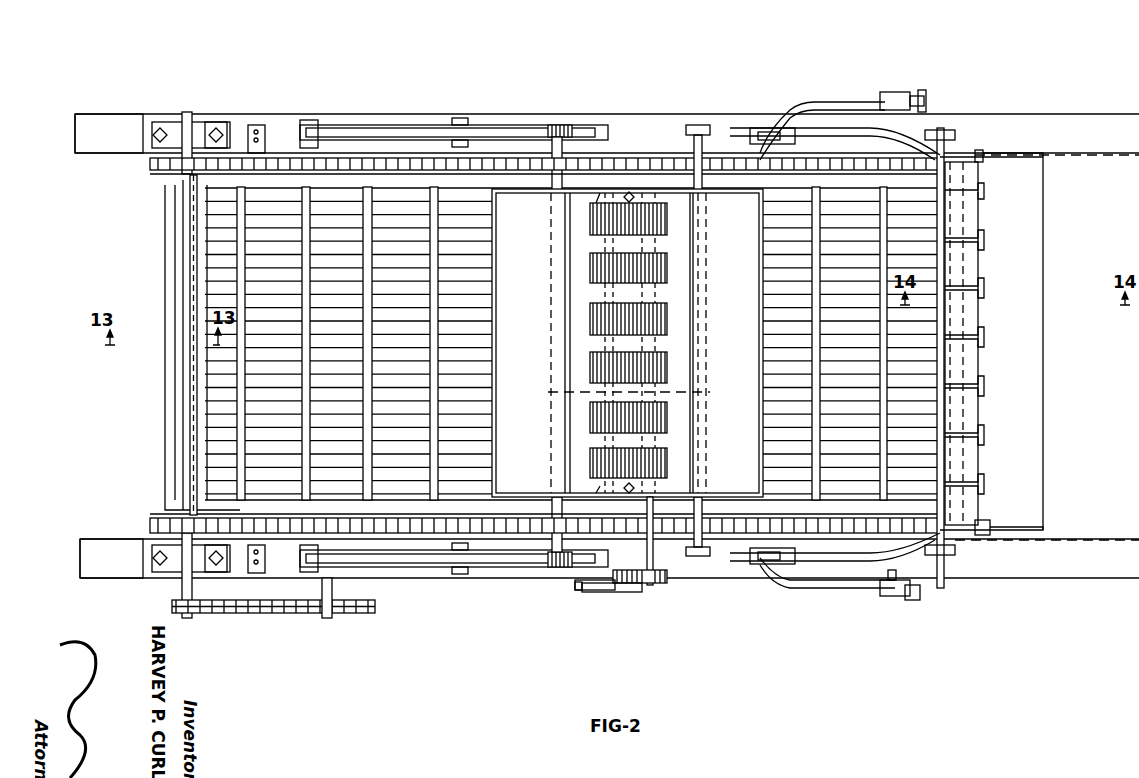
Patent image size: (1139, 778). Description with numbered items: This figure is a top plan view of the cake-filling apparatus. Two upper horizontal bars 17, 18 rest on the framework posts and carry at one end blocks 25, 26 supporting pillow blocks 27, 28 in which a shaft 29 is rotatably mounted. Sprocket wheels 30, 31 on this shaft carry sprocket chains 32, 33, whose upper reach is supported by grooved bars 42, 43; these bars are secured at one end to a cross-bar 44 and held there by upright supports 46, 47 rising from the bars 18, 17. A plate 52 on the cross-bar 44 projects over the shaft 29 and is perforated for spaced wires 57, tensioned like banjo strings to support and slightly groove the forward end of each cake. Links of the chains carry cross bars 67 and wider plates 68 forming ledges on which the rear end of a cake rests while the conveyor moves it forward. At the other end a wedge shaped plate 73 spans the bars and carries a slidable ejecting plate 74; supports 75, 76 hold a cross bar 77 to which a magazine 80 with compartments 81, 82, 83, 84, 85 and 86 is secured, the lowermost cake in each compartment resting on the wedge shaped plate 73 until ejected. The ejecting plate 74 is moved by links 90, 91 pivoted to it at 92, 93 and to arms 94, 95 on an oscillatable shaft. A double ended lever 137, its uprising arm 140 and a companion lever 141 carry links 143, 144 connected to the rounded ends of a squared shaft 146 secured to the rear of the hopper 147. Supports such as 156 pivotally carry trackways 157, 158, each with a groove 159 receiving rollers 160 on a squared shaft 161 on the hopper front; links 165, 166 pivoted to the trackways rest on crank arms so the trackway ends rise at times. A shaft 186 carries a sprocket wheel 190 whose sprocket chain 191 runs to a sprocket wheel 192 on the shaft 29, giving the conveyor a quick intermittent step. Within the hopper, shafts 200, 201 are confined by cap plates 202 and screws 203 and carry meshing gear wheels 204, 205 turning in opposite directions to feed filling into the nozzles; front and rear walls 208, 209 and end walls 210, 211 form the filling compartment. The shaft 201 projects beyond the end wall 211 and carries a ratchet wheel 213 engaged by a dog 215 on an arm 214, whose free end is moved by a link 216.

The upper horizontal bar 17 is at (90, 565).
The upper horizontal bar 18 is at (118, 118).
The block 25 is at (148, 572).
The block 26 is at (148, 122).
The pillow block 27 is at (175, 570).
The pillow block 28 is at (215, 122).
The shaft 29 is at (187, 112).
The sprocket wheel 30 is at (160, 516).
The sprocket wheel 31 is at (155, 176).
The sprocket chain 32 is at (282, 533).
The sprocket chain 33 is at (282, 160).
The bar 42 is at (454, 561).
The bar 43 is at (375, 114).
The cross-bar 44 is at (185, 467).
The upright support 46 is at (257, 573).
The upright support 47 is at (257, 125).
The plate 52 is at (165, 454).
The wires 57 is at (395, 327).
The cross bar 67 is at (363, 186).
The plate 68 is at (300, 186).
The wedge shaped plate 73 is at (607, 346).
The ejecting plate 74 is at (1043, 241).
The support 75 is at (942, 570).
The support 76 is at (945, 128).
The cross bar 77 is at (937, 190).
The magazine 80 is at (982, 195).
The compartment 81 is at (982, 229).
The compartment 82 is at (982, 277).
The compartment 83 is at (982, 324).
The compartment 84 is at (982, 371).
The compartment 85 is at (982, 424).
The compartment 86 is at (982, 484).
The link 90 is at (888, 561).
The link 91 is at (855, 136).
The pivot 92 is at (983, 535).
The pivot 93 is at (984, 152).
The arm 94 is at (760, 555).
The arm 95 is at (760, 140).
The double ended lever 137 is at (922, 90).
The uprising arm 140 is at (890, 92).
The lever 141 is at (885, 596).
The link 143 is at (845, 102).
The link 144 is at (840, 590).
The squared shaft 146 is at (706, 374).
The hopper 147 is at (758, 226).
The support 156 is at (305, 120).
The trackway 157 is at (400, 572).
The trackway 158 is at (398, 125).
The groove 159 is at (512, 128).
The roller 160 is at (556, 125).
The squared shaft 161 is at (551, 360).
The link 165 is at (460, 574).
The link 166 is at (462, 118).
The shaft 186 is at (332, 618).
The sprocket wheel 190 is at (287, 613).
The sprocket chain 191 is at (265, 613).
The sprocket wheel 192 is at (215, 613).
The shaft 200 is at (555, 392).
The shaft 201 is at (729, 393).
The cap plate 202 is at (600, 193).
The screw 203 is at (634, 192).
The gear wheel 204 is at (590, 270).
The gear wheel 205 is at (667, 272).
The front wall 208 is at (495, 332).
The rear wall 209 is at (758, 332).
The end wall 210 is at (545, 205).
The end wall 211 is at (758, 490).
The ratchet wheel 213 is at (670, 582).
The arm 214 is at (575, 590).
The dog 215 is at (615, 583).
The link 216 is at (612, 600).